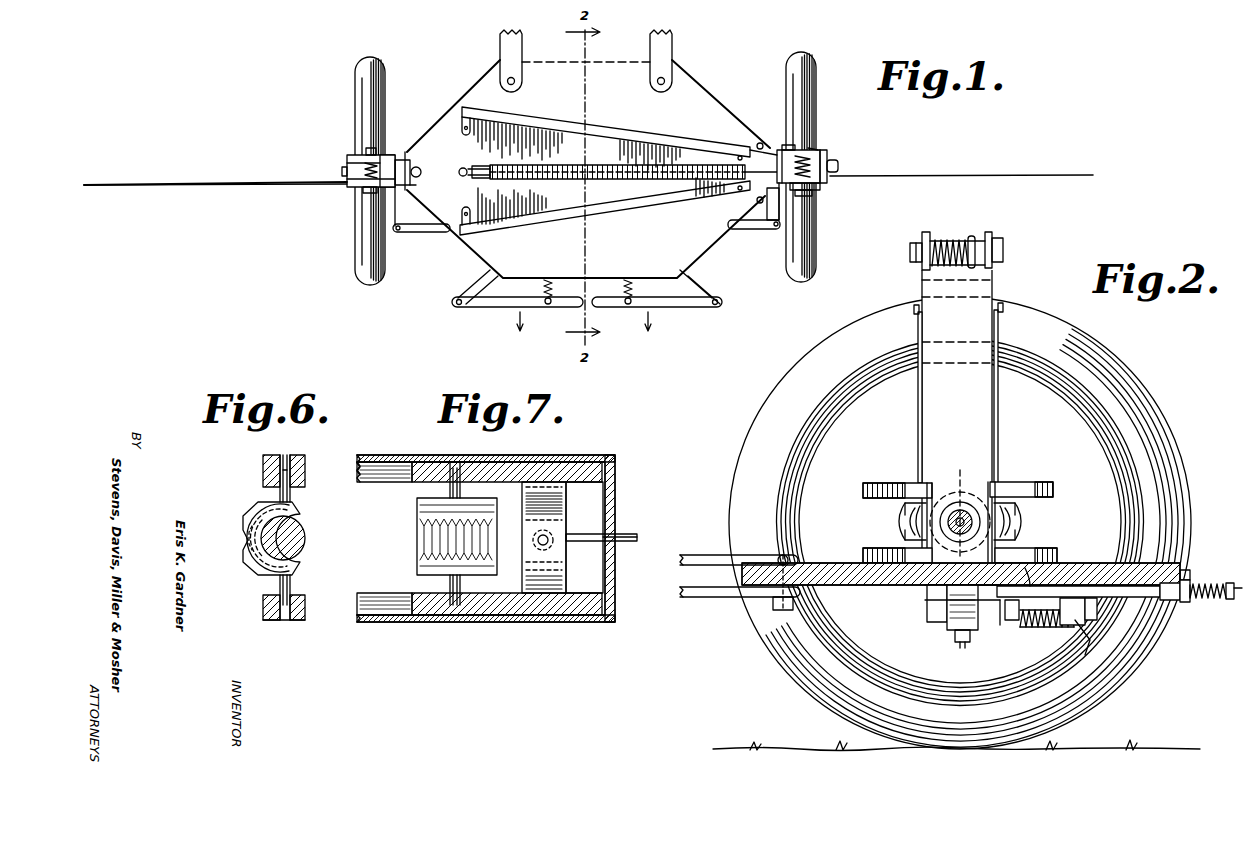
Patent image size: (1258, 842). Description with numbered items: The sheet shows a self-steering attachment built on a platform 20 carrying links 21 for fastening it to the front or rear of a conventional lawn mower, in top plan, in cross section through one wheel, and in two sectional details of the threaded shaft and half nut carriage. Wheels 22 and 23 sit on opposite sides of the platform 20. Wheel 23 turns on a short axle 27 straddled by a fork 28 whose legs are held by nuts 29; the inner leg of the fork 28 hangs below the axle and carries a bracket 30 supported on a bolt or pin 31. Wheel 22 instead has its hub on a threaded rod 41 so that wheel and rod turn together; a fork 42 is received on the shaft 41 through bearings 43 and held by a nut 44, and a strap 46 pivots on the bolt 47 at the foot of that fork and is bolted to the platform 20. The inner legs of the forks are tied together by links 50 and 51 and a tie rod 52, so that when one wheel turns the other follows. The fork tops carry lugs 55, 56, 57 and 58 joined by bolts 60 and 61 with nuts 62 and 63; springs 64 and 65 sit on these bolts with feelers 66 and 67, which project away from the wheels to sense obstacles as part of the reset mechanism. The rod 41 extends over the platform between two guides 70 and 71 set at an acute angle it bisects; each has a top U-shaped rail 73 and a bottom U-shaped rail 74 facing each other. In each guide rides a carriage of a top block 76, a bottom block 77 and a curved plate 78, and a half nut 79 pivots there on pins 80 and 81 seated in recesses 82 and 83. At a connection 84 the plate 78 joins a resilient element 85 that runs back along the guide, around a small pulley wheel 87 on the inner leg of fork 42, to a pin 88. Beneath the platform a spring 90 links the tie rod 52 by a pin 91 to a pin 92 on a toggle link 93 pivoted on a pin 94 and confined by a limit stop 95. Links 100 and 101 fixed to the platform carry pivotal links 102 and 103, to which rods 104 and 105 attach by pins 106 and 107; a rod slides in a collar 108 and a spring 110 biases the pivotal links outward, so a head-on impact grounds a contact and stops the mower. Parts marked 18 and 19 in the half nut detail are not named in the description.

In FIG. 6, the bearing body 18 is at (252, 504).
In FIG. 6, the bearing recess 19 is at (262, 556).
In FIG. 1, the platform 20 is at (700, 113).
In FIG. 2, the platform 20 is at (1180, 566).
In FIG. 1, the links 21 is at (672, 47).
In FIG. 2, the links 21 is at (692, 555).
In FIG. 1, the wheel 22 is at (816, 82).
In FIG. 2, the wheel 22 is at (1173, 463).
In FIG. 1, the wheel 23 is at (386, 108).
In FIG. 1, the short axle 27 is at (410, 165).
In FIG. 1, the fork 28 is at (352, 156).
In FIG. 1, the nuts 29 is at (342, 171).
In FIG. 1, the bracket 30 is at (416, 185).
In FIG. 1, the bolt or pin 31 is at (421, 171).
In FIG. 1, the threaded rod 41 is at (554, 181).
In FIG. 2, the threaded rod 41 is at (957, 512).
In FIG. 6, the threaded rod 41 is at (305, 540).
In FIG. 1, the fork 42 is at (825, 157).
In FIG. 2, the fork 42 is at (975, 315).
In FIG. 2, the bearings 43 is at (965, 512).
In FIG. 1, the nut 44 is at (840, 166).
In FIG. 2, the strap 46 is at (947, 605).
In FIG. 2, the pin or bolt 47 is at (962, 650).
In FIG. 1, the link 50 is at (767, 207).
In FIG. 2, the link 50 is at (1062, 622).
In FIG. 1, the link 51 is at (400, 213).
In FIG. 1, the tie rod 52 is at (745, 230).
In FIG. 2, the tie rod 52 is at (1095, 612).
In FIG. 1, the lug 55 is at (823, 150).
In FIG. 2, the lug 55 is at (922, 236).
In FIG. 1, the lug 56 is at (820, 187).
In FIG. 2, the lug 56 is at (993, 234).
In FIG. 1, the lug 57 is at (393, 155).
In FIG. 1, the lug 58 is at (352, 187).
In FIG. 1, the bolt 60 is at (810, 197).
In FIG. 2, the bolt 60 is at (1004, 250).
In FIG. 1, the bolt 61 is at (368, 193).
In FIG. 1, the nut 62 is at (813, 148).
In FIG. 2, the nut 62 is at (912, 260).
In FIG. 1, the nut 63 is at (370, 148).
In FIG. 1, the spring 64 is at (822, 162).
In FIG. 2, the spring 64 is at (950, 240).
In FIG. 1, the spring 65 is at (362, 166).
In FIG. 1, the feeler 66 is at (1035, 175).
In FIG. 2, the feeler 66 is at (972, 236).
In FIG. 1, the feeler 67 is at (198, 182).
In FIG. 1, the guide 70 is at (625, 118).
In FIG. 2, the guide 70 is at (898, 477).
In FIG. 7, the guide 70 is at (624, 470).
In FIG. 1, the guide 71 is at (615, 222).
In FIG. 2, the guide 71 is at (1040, 480).
In FIG. 2, the top U-shaped rail 73 is at (1053, 490).
In FIG. 6, the top U-shaped rail 73 is at (263, 460).
In FIG. 7, the top U-shaped rail 73 is at (380, 460).
In FIG. 2, the bottom U-shaped rail 74 is at (1057, 556).
In FIG. 6, the bottom U-shaped rail 74 is at (305, 605).
In FIG. 7, the bottom U-shaped rail 74 is at (380, 615).
In FIG. 6, the top block 76 is at (305, 458).
In FIG. 7, the top block 76 is at (560, 462).
In FIG. 6, the bottom block 77 is at (292, 620).
In FIG. 7, the bottom block 77 is at (545, 615).
In FIG. 7, the curved plate 78 is at (568, 522).
In FIG. 2, the half nut 79 is at (1022, 525).
In FIG. 7, the half nut 79 is at (417, 568).
In FIG. 2, the pin 80 is at (1010, 500).
In FIG. 6, the pin 80 is at (305, 475).
In FIG. 7, the pin 80 is at (482, 462).
In FIG. 2, the pin 81 is at (1020, 545).
In FIG. 6, the pin 81 is at (263, 612).
In FIG. 7, the pin 81 is at (452, 600).
In FIG. 6, the recess 82 is at (287, 458).
In FIG. 7, the recess 82 is at (452, 465).
In FIG. 6, the recess 83 is at (280, 620).
In FIG. 7, the recess 83 is at (462, 600).
In FIG. 6, the connection 84 is at (246, 532).
In FIG. 7, the connection 84 is at (537, 543).
In FIG. 1, the resilient element 85 is at (763, 148).
In FIG. 2, the resilient element 85 is at (999, 412).
In FIG. 7, the resilient element 85 is at (637, 534).
In FIG. 1, the small pulley wheel 87 is at (748, 200).
In FIG. 1, the pin 88 is at (790, 145).
In FIG. 2, the pin 88 is at (1002, 312).
In FIG. 2, the spring 90 is at (1050, 628).
In FIG. 2, the pin 91 is at (1085, 655).
In FIG. 2, the pin 92 is at (1012, 622).
In FIG. 2, the toggle link 93 is at (1095, 588).
In FIG. 2, the pin 94 is at (1168, 600).
In FIG. 2, the limit stop 95 is at (1031, 568).
In FIG. 1, the link 100 is at (700, 280).
In FIG. 1, the link 101 is at (484, 278).
In FIG. 1, the pivotal link 102 is at (682, 307).
In FIG. 2, the pivotal link 102 is at (1240, 592).
In FIG. 1, the pivotal link 103 is at (484, 307).
In FIG. 1, the rod 104 is at (633, 289).
In FIG. 2, the rod 104 is at (1210, 600).
In FIG. 1, the rod 105 is at (544, 289).
In FIG. 1, the pin 106 is at (628, 307).
In FIG. 2, the pin 106 is at (1230, 583).
In FIG. 1, the pin 107 is at (548, 307).
In FIG. 2, the collar 108 is at (1190, 600).
In FIG. 2, the spring 110 is at (1188, 582).